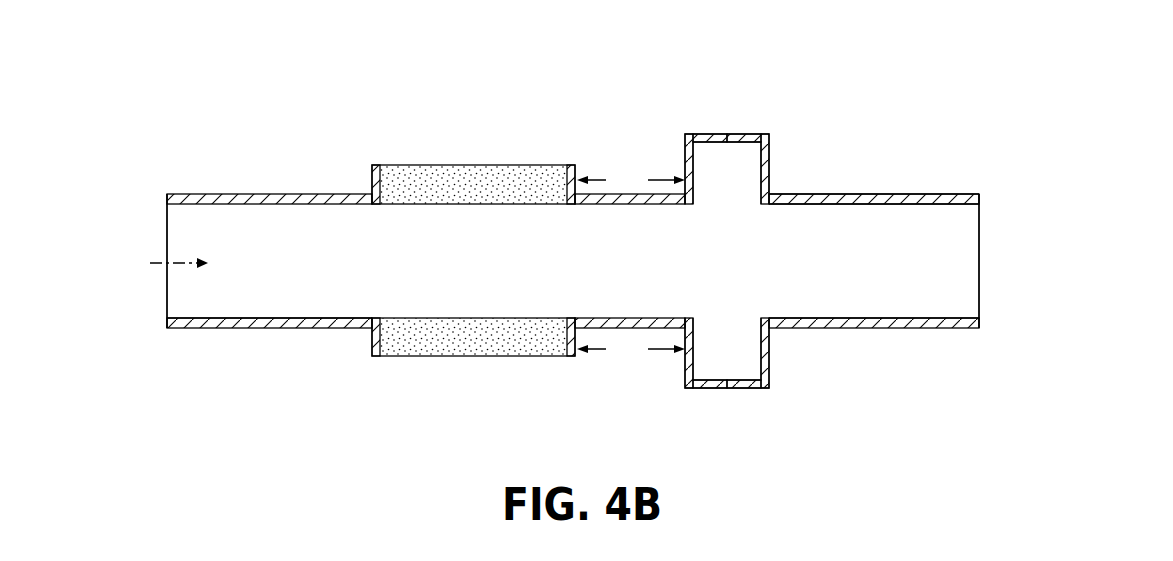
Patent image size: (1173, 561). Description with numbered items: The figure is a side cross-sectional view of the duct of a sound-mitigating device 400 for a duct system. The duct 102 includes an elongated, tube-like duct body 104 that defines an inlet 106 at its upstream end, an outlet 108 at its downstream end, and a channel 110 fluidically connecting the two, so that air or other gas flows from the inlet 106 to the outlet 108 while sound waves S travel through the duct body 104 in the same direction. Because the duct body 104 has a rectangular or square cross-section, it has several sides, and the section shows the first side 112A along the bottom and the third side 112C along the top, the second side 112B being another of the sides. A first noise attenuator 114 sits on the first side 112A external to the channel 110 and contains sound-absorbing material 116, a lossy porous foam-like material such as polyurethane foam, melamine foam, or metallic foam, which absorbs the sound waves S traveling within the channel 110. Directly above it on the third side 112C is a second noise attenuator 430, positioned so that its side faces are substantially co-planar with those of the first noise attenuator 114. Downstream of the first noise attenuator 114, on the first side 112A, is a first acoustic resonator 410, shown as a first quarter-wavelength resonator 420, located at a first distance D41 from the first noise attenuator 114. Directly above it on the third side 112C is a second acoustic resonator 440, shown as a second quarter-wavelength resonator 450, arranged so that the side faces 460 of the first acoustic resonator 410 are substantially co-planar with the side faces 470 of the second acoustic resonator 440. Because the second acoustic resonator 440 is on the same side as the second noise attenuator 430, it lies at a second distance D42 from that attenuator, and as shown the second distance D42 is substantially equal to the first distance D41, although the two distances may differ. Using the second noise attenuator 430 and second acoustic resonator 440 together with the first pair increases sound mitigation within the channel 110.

The sound-mitigating device 400 is at (586, 68).
The duct 102 is at (875, 194).
The duct body 104 is at (914, 194).
The inlet 106 is at (167, 194).
The outlet 108 is at (979, 194).
The channel 110 is at (962, 255).
The first side 112A is at (210, 328).
The second side 112B is at (308, 307).
The third side 112C is at (263, 194).
The first noise attenuator 114 is at (458, 356).
The sound-absorbing material 116 is at (513, 340).
The second noise attenuator 430 is at (462, 165).
The second acoustic resonator 440 is at (702, 134).
The second quarter-wavelength resonator 450 is at (757, 134).
The side faces of the second acoustic resonator 470 is at (685, 160).
The first acoustic resonator 410 is at (695, 388).
The first quarter-wavelength resonator 420 is at (762, 388).
The side faces of the first acoustic resonator 460 is at (685, 360).
The sound waves S is at (169, 264).
The second distance D42 is at (631, 184).
The first distance D41 is at (631, 353).